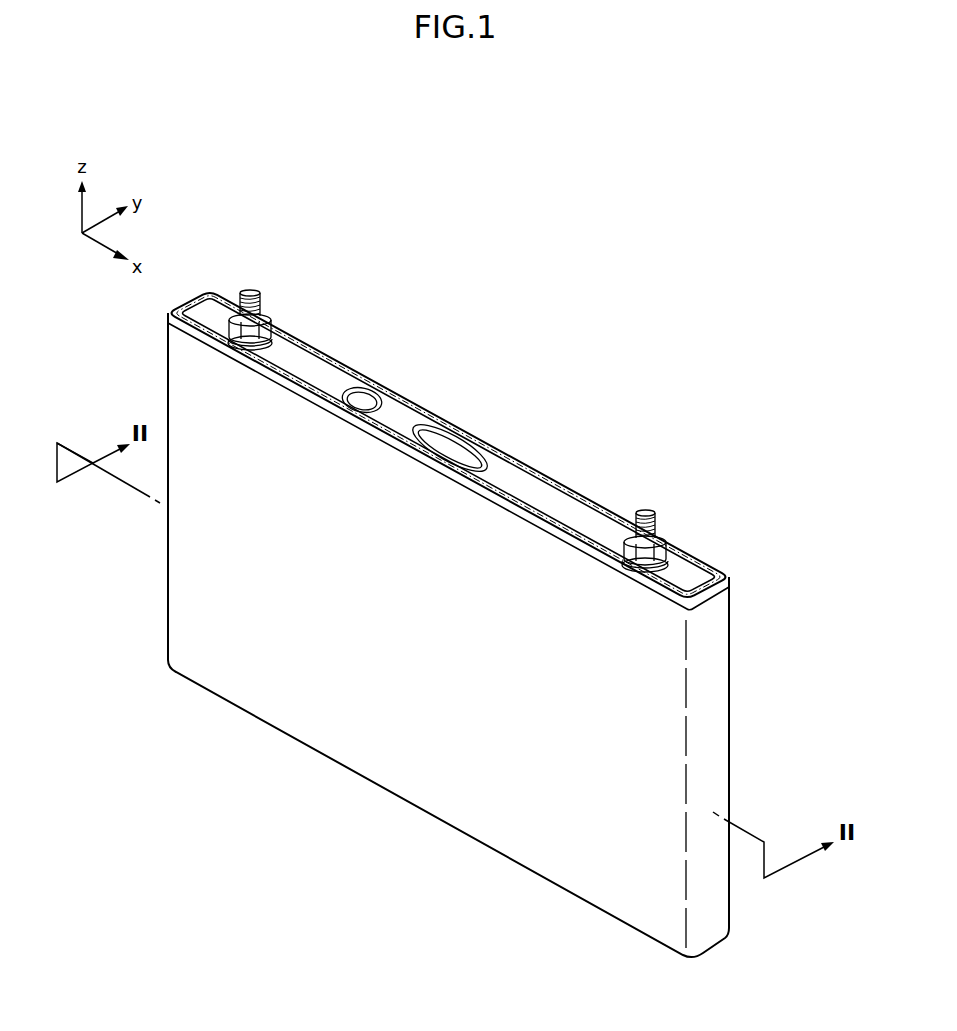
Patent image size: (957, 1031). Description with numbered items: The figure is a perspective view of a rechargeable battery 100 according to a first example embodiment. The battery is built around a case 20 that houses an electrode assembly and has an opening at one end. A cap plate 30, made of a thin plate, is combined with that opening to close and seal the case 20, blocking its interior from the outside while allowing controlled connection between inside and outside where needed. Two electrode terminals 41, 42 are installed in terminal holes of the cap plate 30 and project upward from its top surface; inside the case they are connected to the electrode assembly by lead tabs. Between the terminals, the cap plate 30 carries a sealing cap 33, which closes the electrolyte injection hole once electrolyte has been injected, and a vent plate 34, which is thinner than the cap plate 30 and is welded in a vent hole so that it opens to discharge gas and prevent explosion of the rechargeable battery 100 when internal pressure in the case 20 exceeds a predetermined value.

The rechargeable battery 100 is at (608, 351).
The case 20 is at (427, 795).
The cap plate 30 is at (400, 412).
The sealing cap 33 is at (362, 393).
The vent plate 34 is at (452, 448).
The electrode terminal 41 is at (255, 291).
The electrode terminal 42 is at (647, 512).